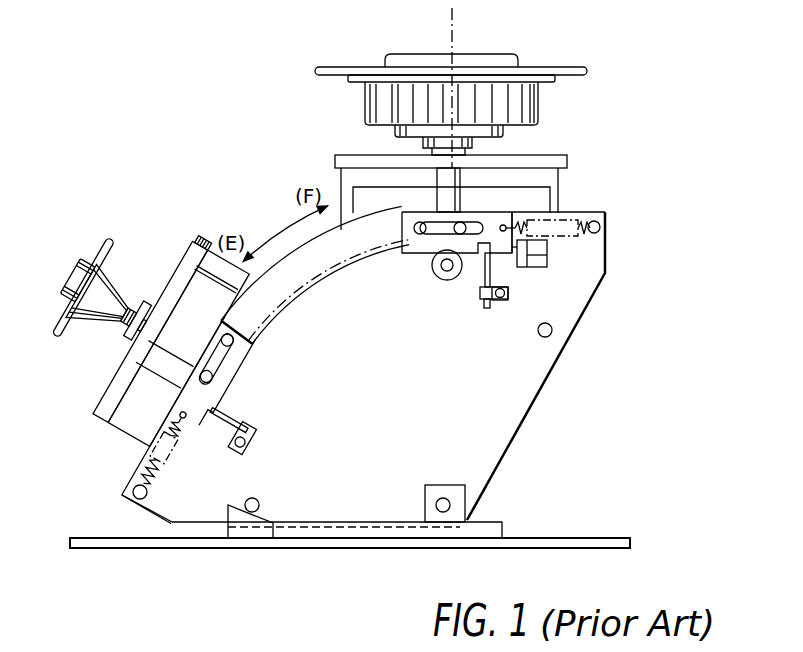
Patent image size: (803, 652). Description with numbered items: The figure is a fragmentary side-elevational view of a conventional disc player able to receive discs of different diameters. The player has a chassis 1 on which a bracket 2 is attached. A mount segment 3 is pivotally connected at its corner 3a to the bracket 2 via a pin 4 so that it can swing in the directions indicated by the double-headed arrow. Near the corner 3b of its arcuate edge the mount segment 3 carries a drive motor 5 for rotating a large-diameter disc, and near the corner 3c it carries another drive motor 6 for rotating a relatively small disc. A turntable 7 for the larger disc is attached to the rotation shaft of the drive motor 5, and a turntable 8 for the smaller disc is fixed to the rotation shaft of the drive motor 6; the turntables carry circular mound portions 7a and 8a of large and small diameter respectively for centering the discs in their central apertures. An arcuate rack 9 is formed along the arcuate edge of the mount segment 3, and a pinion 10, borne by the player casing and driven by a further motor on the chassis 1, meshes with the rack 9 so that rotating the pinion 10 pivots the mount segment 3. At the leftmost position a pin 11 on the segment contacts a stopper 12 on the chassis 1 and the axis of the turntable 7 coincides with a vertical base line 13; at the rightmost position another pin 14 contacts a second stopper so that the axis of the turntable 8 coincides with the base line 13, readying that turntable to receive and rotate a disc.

The chassis 1 is at (540, 549).
The bracket 2 is at (483, 521).
The mount segment 3 is at (556, 366).
The corner of mount segment 3a is at (486, 481).
The corner of mount segment 3b is at (591, 250).
The corner of mount segment 3c is at (158, 505).
The pin 4 is at (445, 497).
The drive motor 5 is at (536, 202).
The drive motor 6 is at (170, 356).
The turntable 7 is at (547, 67).
The circular mound portion 7a is at (506, 56).
The turntable 8 is at (112, 242).
The circular mound portion 8a is at (80, 262).
The arcuate rack 9 is at (313, 294).
The pinion 10 is at (441, 281).
The pin 11 is at (257, 498).
The stopper 12 is at (274, 512).
The vertical base line 13 is at (457, 22).
The pin 14 is at (546, 323).